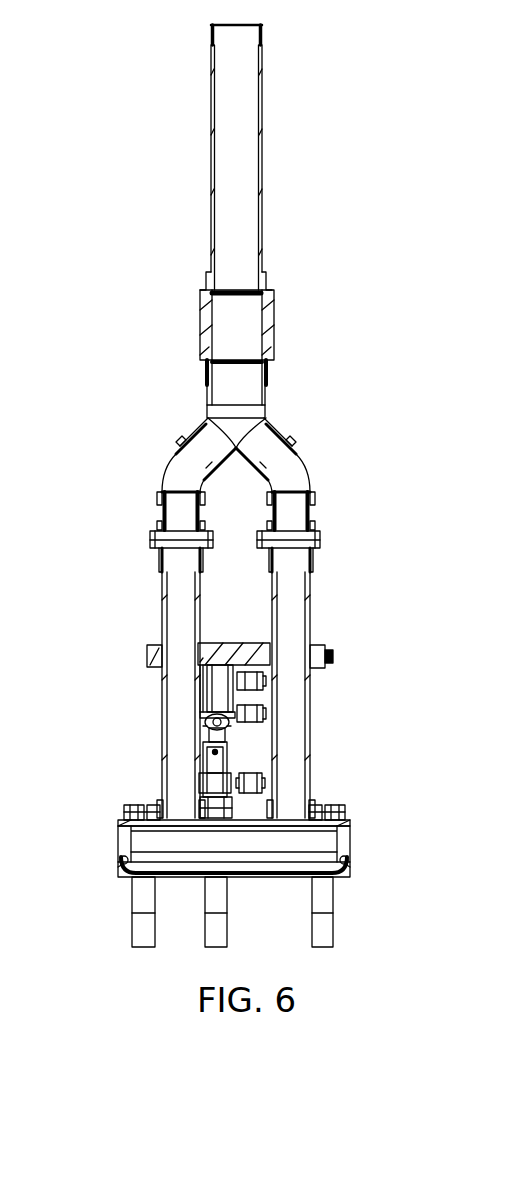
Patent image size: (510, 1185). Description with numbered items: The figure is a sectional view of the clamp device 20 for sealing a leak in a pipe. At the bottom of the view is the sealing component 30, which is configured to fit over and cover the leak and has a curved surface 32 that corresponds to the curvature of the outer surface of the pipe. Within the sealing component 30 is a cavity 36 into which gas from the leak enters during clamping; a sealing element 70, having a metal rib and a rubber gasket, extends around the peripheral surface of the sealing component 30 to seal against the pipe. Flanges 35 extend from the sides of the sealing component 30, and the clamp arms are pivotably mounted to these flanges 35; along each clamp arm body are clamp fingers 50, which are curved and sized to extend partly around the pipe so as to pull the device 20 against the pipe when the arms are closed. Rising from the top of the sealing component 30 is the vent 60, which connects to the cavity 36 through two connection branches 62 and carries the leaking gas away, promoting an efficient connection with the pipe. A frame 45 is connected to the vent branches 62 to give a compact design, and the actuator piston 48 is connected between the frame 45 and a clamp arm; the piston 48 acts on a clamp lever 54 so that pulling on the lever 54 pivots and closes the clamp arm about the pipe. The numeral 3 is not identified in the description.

The device 20 is at (357, 165).
The vent 60 is at (324, 300).
The connection branches 62 is at (160, 598).
The frame 45 is at (240, 642).
The piston 48 is at (200, 700).
The clamp lever 54 is at (228, 782).
The flanges 35 is at (133, 808).
The right fasteners 3 is at (340, 812).
The sealing component 30 is at (343, 840).
The cavity 36 is at (145, 838).
The sealing element 70 is at (343, 870).
The curved surface 32 is at (118, 871).
The clamp fingers 50 is at (372, 897).